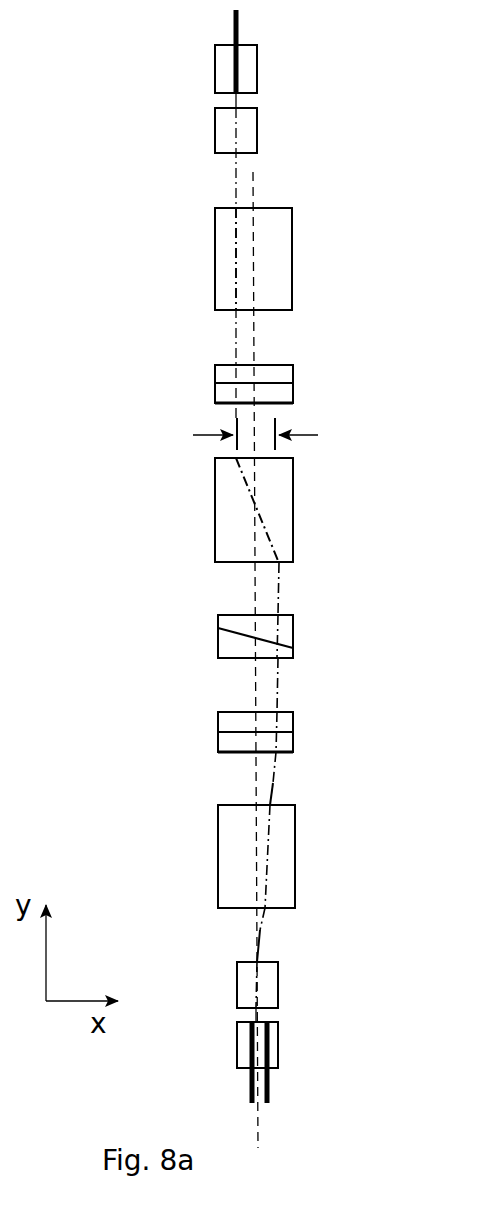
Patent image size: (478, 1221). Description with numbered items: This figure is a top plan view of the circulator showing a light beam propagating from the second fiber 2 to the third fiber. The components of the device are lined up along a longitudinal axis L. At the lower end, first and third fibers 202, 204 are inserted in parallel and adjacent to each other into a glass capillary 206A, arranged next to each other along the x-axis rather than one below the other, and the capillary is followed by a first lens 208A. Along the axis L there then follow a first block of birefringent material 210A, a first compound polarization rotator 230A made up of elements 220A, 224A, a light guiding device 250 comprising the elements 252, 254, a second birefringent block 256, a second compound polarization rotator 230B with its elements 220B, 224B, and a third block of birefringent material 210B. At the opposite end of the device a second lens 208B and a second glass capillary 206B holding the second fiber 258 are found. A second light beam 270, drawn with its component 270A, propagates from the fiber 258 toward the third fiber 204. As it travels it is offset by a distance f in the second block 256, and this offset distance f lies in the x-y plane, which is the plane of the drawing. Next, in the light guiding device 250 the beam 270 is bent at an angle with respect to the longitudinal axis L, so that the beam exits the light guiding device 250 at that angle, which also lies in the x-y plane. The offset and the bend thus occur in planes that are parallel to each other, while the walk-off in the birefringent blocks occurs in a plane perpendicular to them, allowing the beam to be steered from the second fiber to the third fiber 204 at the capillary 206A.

The second fiber 2 is at (434, 145).
The longitudinal axis L is at (257, 180).
The second fiber 258 is at (235, 15).
The second glass capillary 206B is at (257, 72).
The second lens 208B is at (215, 125).
The second light beam 270 is at (236, 183).
The second light beam component 270A is at (236, 268).
The third block of birefringent material 210B is at (292, 250).
The second compound polarization rotator 230B is at (280, 364).
The polarization rotator element 224B is at (215, 370).
The polarization rotator element 220B is at (293, 392).
The offset distance f is at (298, 437).
The light guiding device 250 is at (266, 558).
The second birefringent block 256 is at (215, 505).
The light guiding device element 252 is at (218, 640).
The light guiding device element 254 is at (293, 623).
The first compound polarization rotator 230A is at (293, 726).
The polarization rotator element 224A is at (293, 720).
The polarization rotator element 220A is at (218, 740).
The first block of birefringent material 210A is at (295, 855).
The first lens 208A is at (278, 977).
The glass capillary 206A is at (278, 1037).
The third fiber 204 is at (248, 1085).
The first fiber 202 is at (270, 1087).